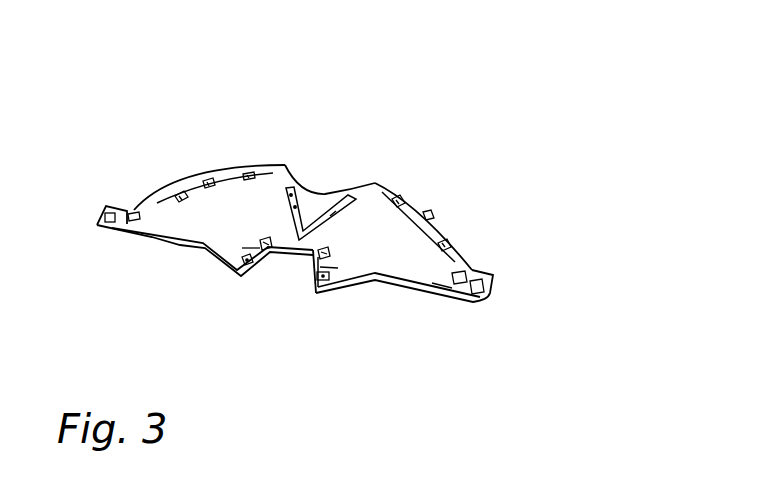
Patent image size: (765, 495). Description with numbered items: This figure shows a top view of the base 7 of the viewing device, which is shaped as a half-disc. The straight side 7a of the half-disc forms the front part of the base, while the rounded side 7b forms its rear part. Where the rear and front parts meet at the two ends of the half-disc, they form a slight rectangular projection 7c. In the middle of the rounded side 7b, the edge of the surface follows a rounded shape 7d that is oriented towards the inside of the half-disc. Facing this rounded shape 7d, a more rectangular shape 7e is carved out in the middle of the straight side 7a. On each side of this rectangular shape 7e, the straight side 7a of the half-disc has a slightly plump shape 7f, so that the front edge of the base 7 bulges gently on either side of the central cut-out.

The base 7 is at (150, 242).
The straight side 7a is at (423, 290).
The rounded side 7b is at (225, 167).
The rectangular projection 7c is at (493, 283).
The rounded shape 7d is at (318, 193).
The rectangular shape 7e is at (291, 256).
The plump shape 7f is at (225, 268).